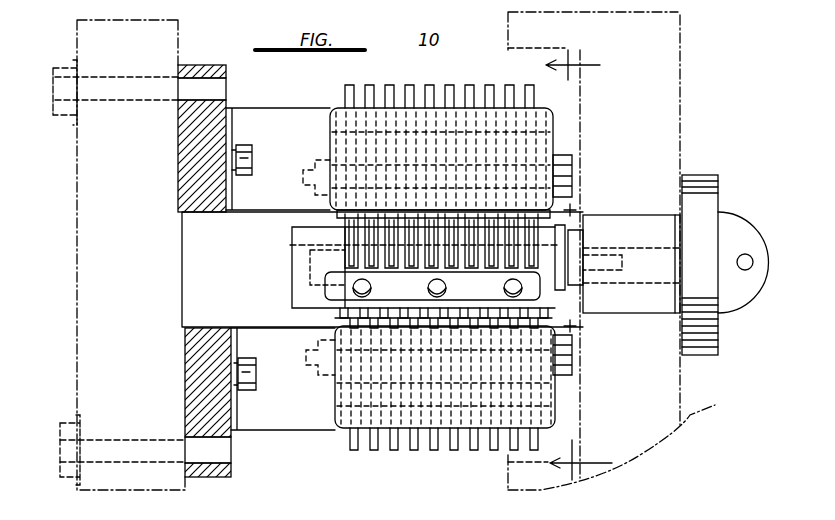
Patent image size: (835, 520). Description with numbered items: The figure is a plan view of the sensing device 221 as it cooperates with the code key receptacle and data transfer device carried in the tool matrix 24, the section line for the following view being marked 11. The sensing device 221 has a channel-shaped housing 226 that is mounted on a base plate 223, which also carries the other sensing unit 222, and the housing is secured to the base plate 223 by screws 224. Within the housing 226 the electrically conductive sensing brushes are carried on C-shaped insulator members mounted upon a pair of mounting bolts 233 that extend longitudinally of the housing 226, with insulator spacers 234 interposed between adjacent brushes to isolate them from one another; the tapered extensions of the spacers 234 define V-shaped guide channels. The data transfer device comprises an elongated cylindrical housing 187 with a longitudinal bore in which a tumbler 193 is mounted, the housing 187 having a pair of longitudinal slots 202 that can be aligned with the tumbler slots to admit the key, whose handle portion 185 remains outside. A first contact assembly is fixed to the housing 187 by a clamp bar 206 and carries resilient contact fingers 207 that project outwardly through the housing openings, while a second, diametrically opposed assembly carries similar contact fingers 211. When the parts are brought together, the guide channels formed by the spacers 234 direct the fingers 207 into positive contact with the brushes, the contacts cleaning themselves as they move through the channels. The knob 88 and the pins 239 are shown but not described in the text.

The section line 11- 11 is at (579, 263).
The tool matrix 24 is at (617, 251).
The knob 88 is at (712, 190).
The handle portion 185 is at (735, 238).
The housing 187 is at (295, 258).
The tumbler 193 is at (650, 285).
The longitudinal slots 202 is at (318, 268).
The clamp bar 206 is at (495, 294).
The contact fingers 207 is at (416, 225).
The contact fingers 211 is at (490, 306).
The sensing device 221 is at (325, 93).
The sensing unit 222 is at (304, 438).
The base plate 223 is at (190, 163).
The screws 224 is at (250, 147).
The housing 226 is at (295, 200).
The mounting bolts 233 is at (562, 178).
The insulator spacers 234 is at (503, 225).
The terminal pins 239 is at (430, 86).